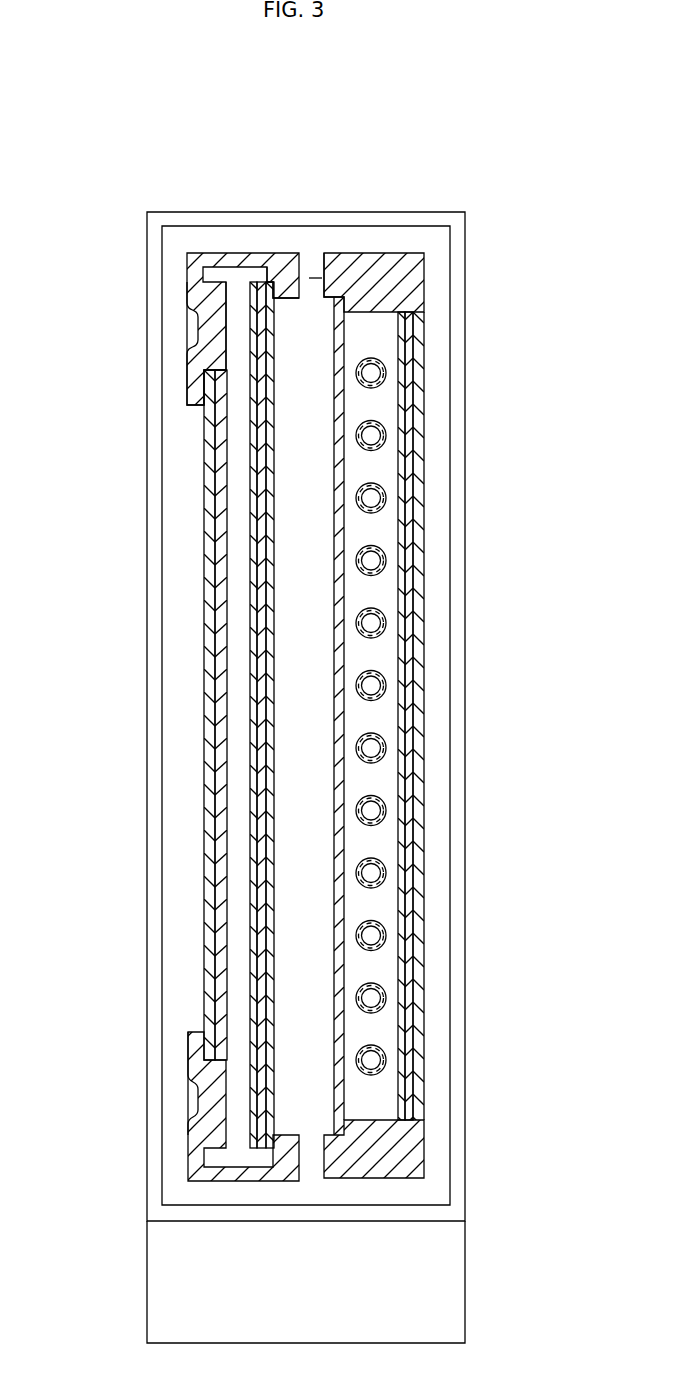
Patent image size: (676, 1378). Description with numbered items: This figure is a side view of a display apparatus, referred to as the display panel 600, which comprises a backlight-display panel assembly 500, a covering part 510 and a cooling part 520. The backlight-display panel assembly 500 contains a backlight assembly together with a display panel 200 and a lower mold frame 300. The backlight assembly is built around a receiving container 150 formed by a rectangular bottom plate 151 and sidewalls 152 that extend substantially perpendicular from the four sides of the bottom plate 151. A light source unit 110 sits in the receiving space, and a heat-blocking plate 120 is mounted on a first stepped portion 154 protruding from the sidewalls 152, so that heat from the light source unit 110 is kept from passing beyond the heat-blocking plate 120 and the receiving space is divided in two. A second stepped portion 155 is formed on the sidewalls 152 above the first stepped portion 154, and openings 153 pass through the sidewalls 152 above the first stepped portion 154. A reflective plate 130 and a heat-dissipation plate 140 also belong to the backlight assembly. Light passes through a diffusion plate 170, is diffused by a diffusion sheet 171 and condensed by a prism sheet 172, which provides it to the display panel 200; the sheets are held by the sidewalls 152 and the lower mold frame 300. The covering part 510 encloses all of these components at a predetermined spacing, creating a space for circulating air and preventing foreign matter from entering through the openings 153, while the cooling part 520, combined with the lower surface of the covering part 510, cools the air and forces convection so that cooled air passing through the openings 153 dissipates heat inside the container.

The display panel 600 is at (330, 100).
The backlight-display panel assembly 500 is at (189, 613).
The covering part 510 is at (458, 832).
The cooling part 520 is at (465, 1293).
The receiving container 150 is at (450, 152).
The bottom plate 151 is at (427, 297).
The sidewalls 152 is at (283, 262).
The openings 153 is at (318, 278).
The first stepped portion 154 is at (347, 307).
The second stepped portion 155 is at (258, 287).
The lower mold frame 300 is at (235, 1133).
The heat-dissipation plate 140 is at (193, 1052).
The display panel 200 is at (217, 802).
The diffusion plate 170 is at (273, 945).
The diffusion sheet 171 is at (263, 907).
The prism sheet 172 is at (253, 877).
The heat-blocking plate 120 is at (342, 1100).
The reflective plate 130 is at (403, 875).
The light source unit 110 is at (386, 996).